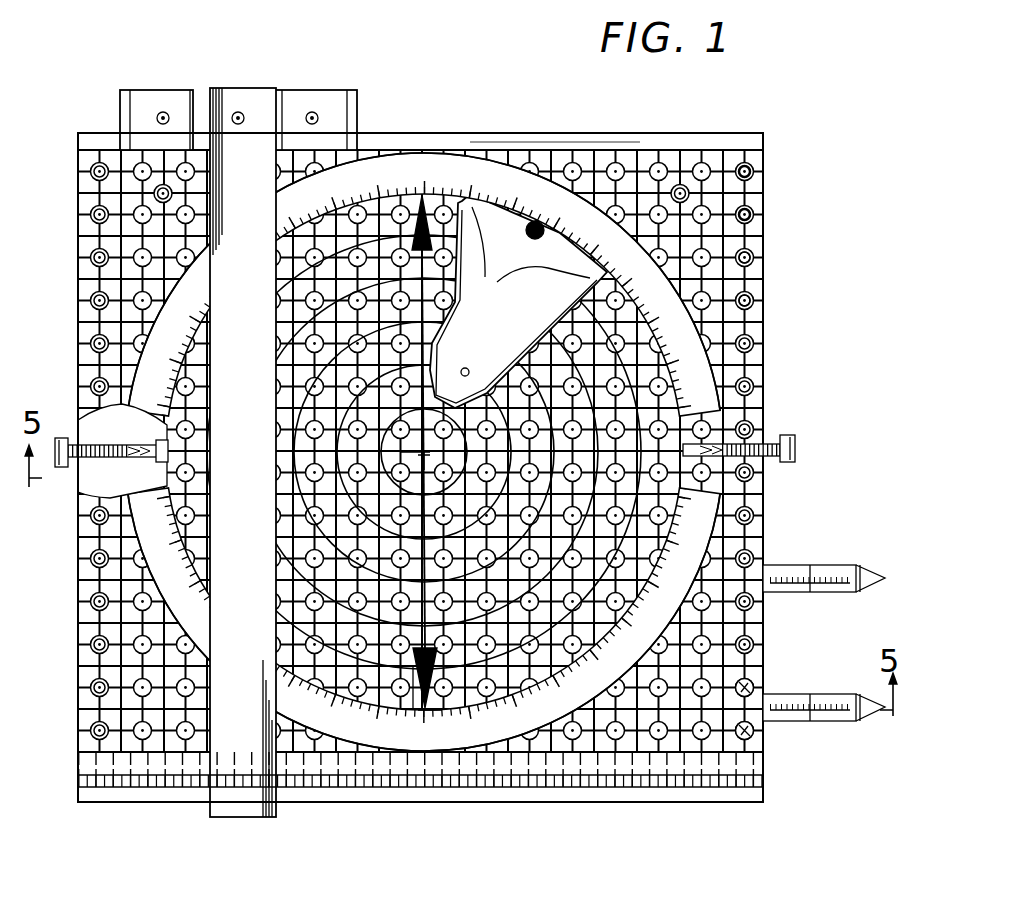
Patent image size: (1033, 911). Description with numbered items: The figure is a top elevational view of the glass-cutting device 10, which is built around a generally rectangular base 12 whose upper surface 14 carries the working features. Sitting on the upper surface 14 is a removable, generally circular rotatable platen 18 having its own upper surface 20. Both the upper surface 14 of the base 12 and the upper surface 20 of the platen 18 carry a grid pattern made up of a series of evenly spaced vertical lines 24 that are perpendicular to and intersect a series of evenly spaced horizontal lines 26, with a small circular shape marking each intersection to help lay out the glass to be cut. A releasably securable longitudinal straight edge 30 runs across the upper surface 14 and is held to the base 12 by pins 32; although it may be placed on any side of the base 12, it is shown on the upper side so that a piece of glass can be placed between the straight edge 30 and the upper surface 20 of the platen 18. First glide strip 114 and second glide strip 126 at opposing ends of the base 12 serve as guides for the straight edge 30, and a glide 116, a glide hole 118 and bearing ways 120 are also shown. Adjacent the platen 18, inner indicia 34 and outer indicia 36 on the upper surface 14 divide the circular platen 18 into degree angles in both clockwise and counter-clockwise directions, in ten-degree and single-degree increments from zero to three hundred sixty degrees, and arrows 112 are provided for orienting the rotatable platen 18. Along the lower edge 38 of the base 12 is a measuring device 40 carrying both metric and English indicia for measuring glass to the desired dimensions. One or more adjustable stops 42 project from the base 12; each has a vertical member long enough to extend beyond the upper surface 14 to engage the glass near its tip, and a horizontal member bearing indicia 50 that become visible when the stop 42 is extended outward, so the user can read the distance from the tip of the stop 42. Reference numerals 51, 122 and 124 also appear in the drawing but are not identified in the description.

The device 10 is at (772, 286).
The base 12 is at (765, 312).
The upper surface 14 is at (627, 140).
The rotatable platen 18 is at (562, 657).
The upper surface 20 is at (473, 500).
The vertical lines 24 is at (745, 197).
The horizontal lines 26 is at (752, 255).
The straight edge 30 is at (240, 90).
The pins 32 is at (165, 110).
The inner indicia 34 is at (548, 692).
The outer indicia 36 is at (537, 728).
The lower edge 38 is at (770, 765).
The measuring device 40 is at (160, 788).
The adjustable stops 42 is at (828, 566).
The indicia 50 is at (818, 702).
The fastening screw 51 is at (753, 680).
The arrows 112 is at (418, 192).
The first glide strip 114 is at (578, 143).
The glide 116 is at (530, 222).
The glide hole 118 is at (468, 366).
The bearing ways 120 is at (442, 367).
The right clamp screw 122 is at (797, 438).
The left clamp screw 124 is at (70, 467).
The second glide strip 126 is at (373, 795).